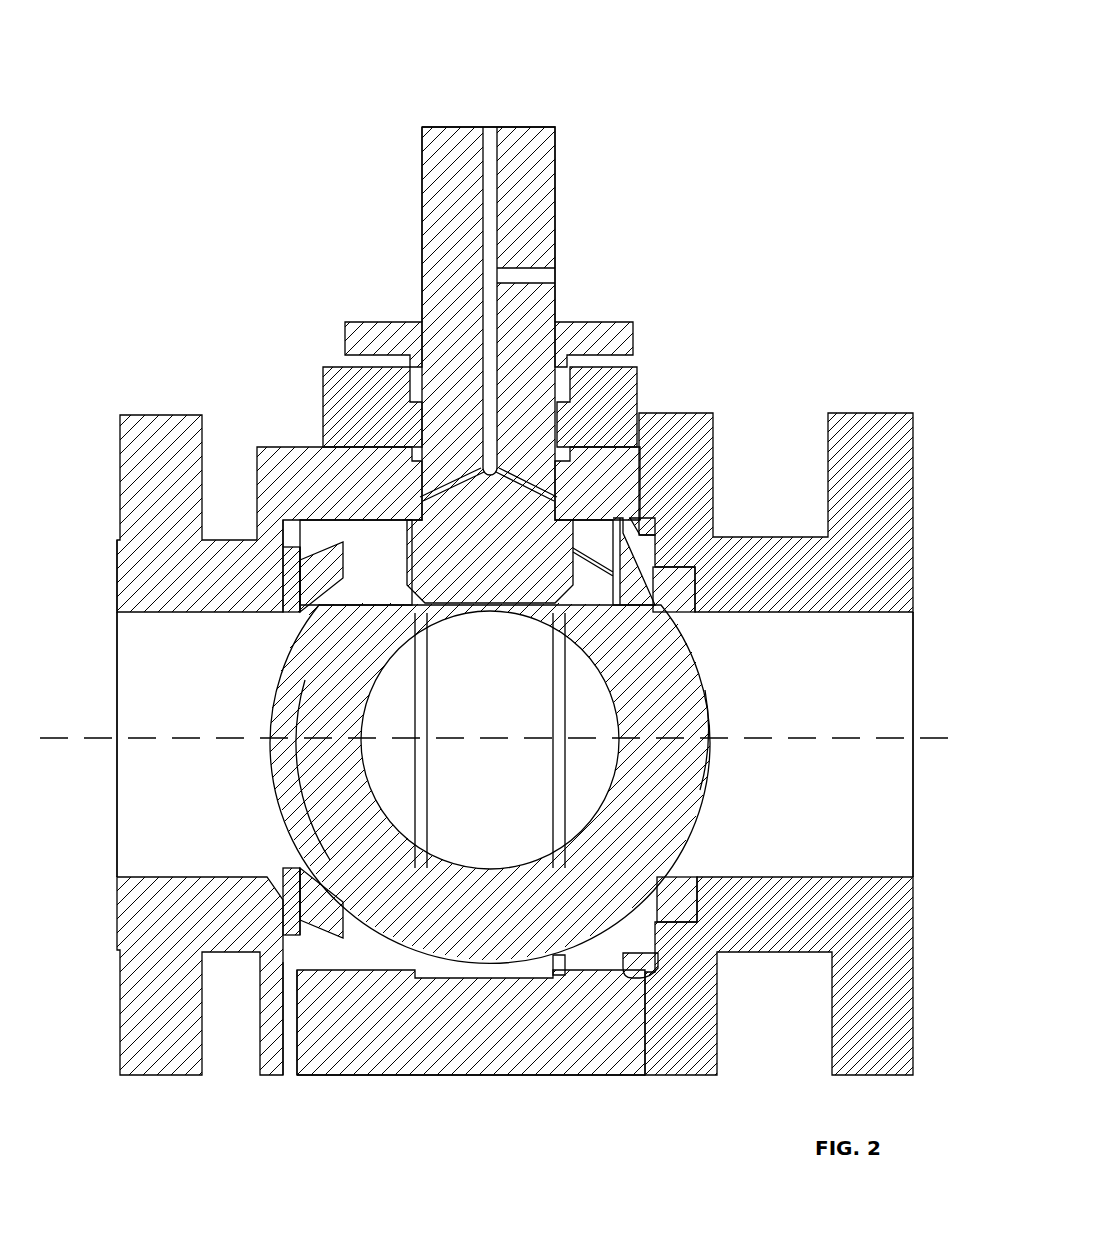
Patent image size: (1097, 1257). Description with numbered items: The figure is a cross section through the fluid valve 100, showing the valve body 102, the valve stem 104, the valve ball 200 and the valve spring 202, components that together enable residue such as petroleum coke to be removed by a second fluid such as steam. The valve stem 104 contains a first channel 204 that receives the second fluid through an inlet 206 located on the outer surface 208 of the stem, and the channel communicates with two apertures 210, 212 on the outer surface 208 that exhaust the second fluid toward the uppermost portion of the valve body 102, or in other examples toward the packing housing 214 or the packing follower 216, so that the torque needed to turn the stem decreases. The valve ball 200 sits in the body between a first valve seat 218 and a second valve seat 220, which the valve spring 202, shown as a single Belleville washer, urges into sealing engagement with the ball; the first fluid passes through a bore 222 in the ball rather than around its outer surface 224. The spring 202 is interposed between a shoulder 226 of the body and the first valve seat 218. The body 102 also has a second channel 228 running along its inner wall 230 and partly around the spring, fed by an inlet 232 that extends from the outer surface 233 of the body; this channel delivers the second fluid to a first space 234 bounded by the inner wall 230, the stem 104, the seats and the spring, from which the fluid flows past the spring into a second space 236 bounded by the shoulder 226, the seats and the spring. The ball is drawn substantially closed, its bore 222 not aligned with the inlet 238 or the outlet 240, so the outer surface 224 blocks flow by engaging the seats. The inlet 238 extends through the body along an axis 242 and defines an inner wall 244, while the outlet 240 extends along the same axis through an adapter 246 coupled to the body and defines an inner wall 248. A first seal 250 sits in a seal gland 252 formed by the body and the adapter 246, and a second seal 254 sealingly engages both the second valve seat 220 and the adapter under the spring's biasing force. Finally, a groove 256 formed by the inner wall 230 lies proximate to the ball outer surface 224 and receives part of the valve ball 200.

The fluid valve 100 is at (147, 268).
The valve body 102 is at (381, 745).
The valve stem 104 is at (534, 312).
The valve ball 200 is at (503, 783).
The valve spring 202 is at (300, 635).
The first channel 204 is at (492, 359).
The inlet 206 is at (566, 278).
The outer surface 208 is at (420, 145).
The aperture 210 is at (428, 500).
The aperture 212 is at (552, 500).
The packing housing 214 is at (638, 382).
The packing follower 216 is at (638, 335).
The first valve seat 218 is at (335, 845).
The second valve seat 220 is at (697, 622).
The bore 222 is at (400, 727).
The outer surface 224 is at (707, 728).
The shoulder 226 is at (280, 880).
The second channel 228 is at (283, 530).
The inner wall 230 is at (490, 740).
The inlet 232 is at (287, 1078).
The outer surface 233 is at (467, 1078).
The first space 234 is at (358, 538).
The second space 236 is at (265, 626).
The inlet 238 is at (120, 692).
The outlet 240 is at (914, 696).
The axis 242 is at (768, 744).
The inner wall 244 is at (158, 744).
The adapter 246 is at (776, 744).
The inner wall 248 is at (875, 744).
The first seal 250 is at (614, 561).
The seal gland 252 is at (658, 516).
The second seal 254 is at (707, 877).
The groove 256 is at (545, 970).